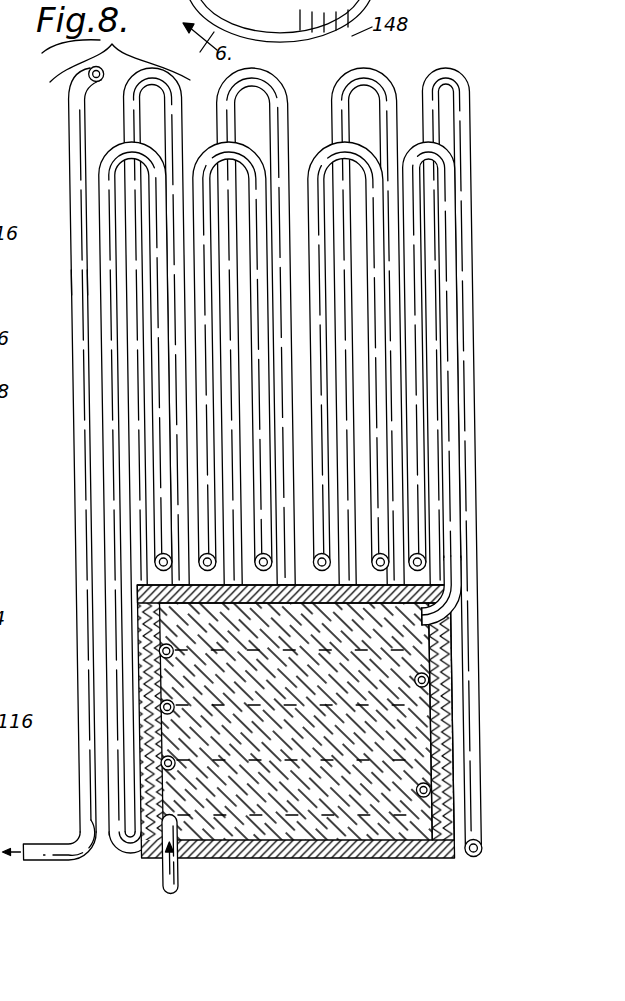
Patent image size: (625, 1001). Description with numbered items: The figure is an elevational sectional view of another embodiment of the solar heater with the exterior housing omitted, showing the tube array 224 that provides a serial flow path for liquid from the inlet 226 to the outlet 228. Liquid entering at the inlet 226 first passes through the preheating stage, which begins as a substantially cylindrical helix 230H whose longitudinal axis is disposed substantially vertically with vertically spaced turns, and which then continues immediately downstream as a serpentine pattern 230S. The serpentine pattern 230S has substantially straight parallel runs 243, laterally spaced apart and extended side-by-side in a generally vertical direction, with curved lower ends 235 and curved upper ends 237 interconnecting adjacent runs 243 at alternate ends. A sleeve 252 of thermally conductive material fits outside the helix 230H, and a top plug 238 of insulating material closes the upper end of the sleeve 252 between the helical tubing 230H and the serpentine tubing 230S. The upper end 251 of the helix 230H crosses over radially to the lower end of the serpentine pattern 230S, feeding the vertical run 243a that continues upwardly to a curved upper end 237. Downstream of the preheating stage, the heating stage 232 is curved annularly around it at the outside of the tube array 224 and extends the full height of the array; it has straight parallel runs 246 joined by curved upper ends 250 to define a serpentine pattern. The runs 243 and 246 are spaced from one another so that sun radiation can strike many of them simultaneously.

The tube array 224 is at (64, 490).
The inlet 226 is at (162, 872).
The outlet 228 is at (42, 842).
The serpentine pattern 230S is at (100, 212).
The cylindrical helix 230H is at (314, 780).
The heating stage 232 is at (64, 280).
The curved lower ends 235 is at (427, 568).
The curved upper ends 237 is at (112, 142).
The top plug 238 is at (193, 606).
The straight parallel runs 243 is at (422, 398).
The vertical run 243a is at (453, 525).
The straight parallel runs 246 is at (397, 280).
The curved upper ends 250 is at (357, 72).
The upper end of the helical preheating stage 251 is at (422, 628).
The sleeve 252 is at (450, 838).